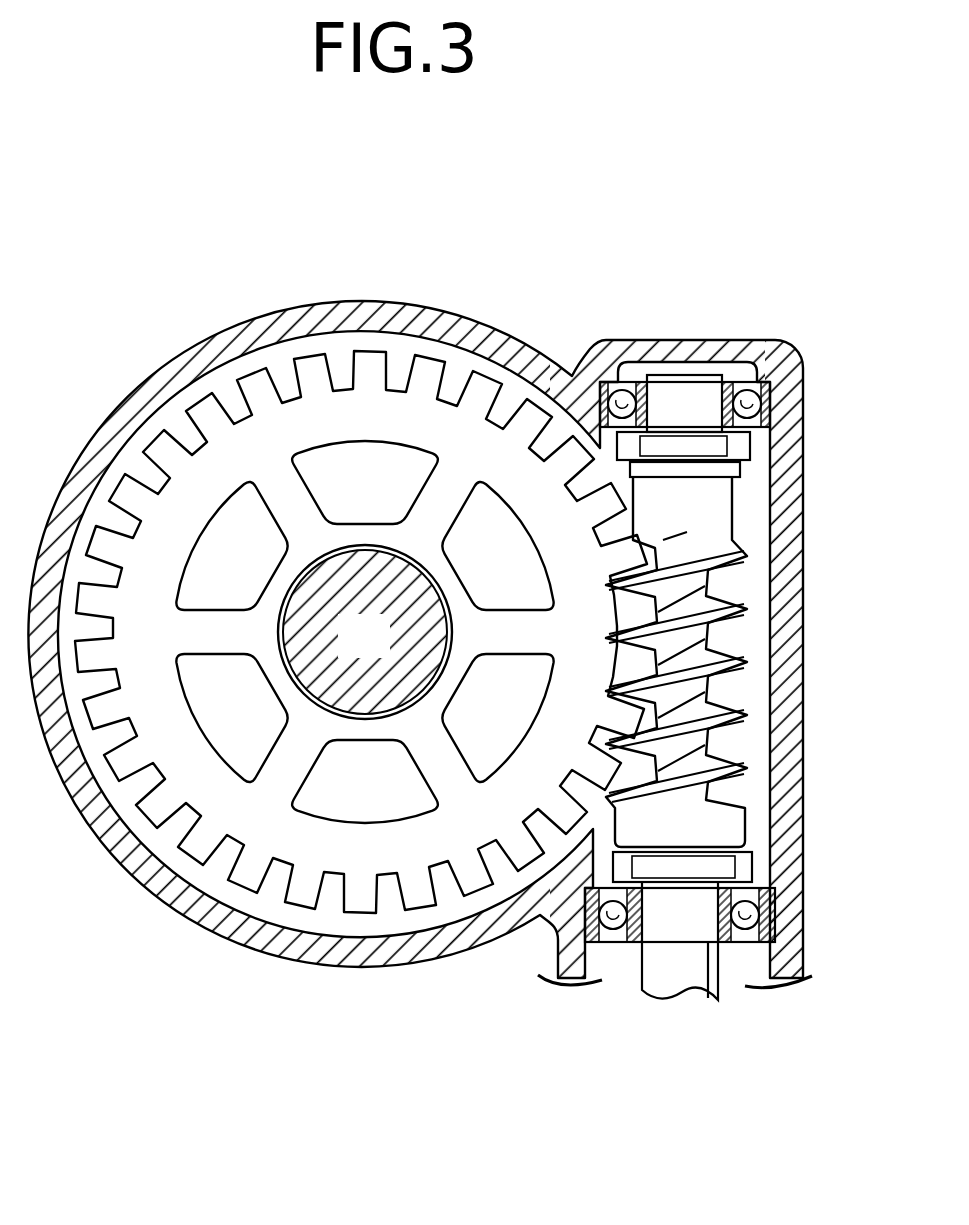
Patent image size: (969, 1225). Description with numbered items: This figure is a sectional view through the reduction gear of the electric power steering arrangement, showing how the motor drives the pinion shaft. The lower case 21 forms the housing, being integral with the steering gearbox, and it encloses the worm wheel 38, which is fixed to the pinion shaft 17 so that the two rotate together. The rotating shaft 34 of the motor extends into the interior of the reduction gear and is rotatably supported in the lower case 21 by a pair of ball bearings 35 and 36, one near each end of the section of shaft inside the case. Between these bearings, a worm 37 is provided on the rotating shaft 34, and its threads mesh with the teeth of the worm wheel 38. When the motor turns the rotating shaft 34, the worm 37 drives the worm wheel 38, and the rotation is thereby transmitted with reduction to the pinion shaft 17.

The lower case 21 is at (355, 317).
The worm wheel 38 is at (262, 392).
The pinion shaft 17 is at (385, 655).
The ball bearing 36 is at (762, 403).
The worm 37 is at (713, 603).
The ball bearing 35 is at (760, 910).
The rotating shaft 34 is at (677, 972).